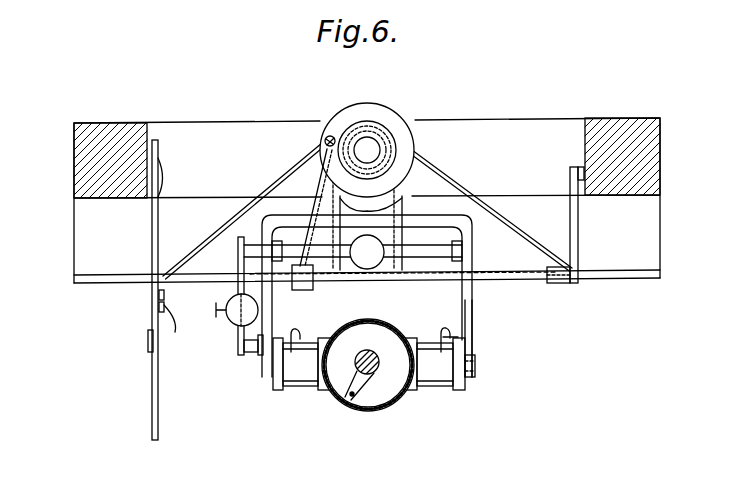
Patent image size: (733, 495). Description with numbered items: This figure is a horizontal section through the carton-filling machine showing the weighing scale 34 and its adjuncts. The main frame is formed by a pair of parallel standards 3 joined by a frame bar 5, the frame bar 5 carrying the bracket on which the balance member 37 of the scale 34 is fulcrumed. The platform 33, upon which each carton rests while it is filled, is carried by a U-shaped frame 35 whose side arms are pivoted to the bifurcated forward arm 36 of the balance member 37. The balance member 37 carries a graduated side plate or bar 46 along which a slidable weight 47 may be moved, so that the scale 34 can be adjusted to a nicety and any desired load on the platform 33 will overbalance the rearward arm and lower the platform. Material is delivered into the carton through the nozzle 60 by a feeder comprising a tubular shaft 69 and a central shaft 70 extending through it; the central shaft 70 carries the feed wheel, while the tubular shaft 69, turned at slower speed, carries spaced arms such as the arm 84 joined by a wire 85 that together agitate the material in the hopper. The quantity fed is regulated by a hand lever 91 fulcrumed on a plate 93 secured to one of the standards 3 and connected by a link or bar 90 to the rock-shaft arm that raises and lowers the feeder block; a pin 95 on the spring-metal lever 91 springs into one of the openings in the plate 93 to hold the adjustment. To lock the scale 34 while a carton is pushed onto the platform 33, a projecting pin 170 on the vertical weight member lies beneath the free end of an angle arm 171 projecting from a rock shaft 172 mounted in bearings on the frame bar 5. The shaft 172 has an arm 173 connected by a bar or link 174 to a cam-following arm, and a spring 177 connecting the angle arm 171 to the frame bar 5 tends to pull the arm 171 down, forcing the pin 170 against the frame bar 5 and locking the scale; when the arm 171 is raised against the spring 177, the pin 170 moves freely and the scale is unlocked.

The standards 3 is at (86, 160).
The frame bar 5 is at (238, 207).
The platform 33 is at (415, 390).
The weighing scale 34 is at (470, 310).
The U-shaped frame 35 is at (280, 391).
The bifurcated forward arm 36 is at (264, 360).
The balance member 37 is at (470, 258).
The side plate or bar 46 is at (240, 350).
The slidable weight 47 is at (230, 320).
The nozzle 60 is at (370, 412).
The tubular shaft 69 is at (380, 350).
The central shaft 70 is at (352, 350).
The arm 84 is at (343, 397).
The wire 85 is at (350, 397).
The link or bar 90 is at (175, 333).
The hand lever 91 is at (152, 398).
The plate 93 is at (150, 300).
The pin 95 is at (147, 341).
The projecting pin 170 is at (367, 110).
The angle arm 171 is at (318, 192).
The rock shaft 172 is at (543, 285).
The arm 173 is at (570, 212).
The bar or link 174 is at (573, 166).
The spring 177 is at (326, 137).